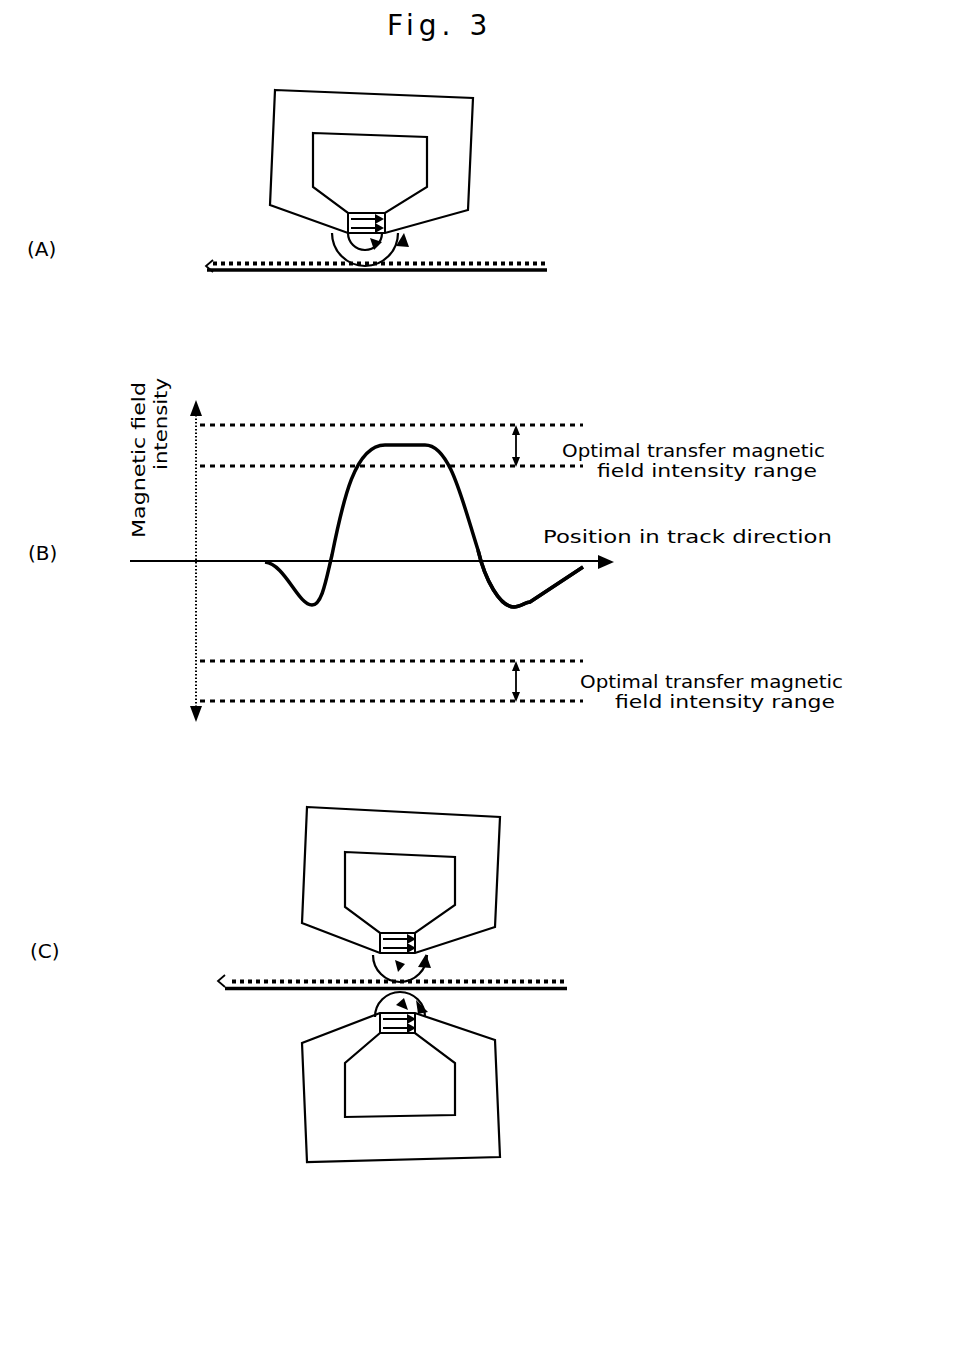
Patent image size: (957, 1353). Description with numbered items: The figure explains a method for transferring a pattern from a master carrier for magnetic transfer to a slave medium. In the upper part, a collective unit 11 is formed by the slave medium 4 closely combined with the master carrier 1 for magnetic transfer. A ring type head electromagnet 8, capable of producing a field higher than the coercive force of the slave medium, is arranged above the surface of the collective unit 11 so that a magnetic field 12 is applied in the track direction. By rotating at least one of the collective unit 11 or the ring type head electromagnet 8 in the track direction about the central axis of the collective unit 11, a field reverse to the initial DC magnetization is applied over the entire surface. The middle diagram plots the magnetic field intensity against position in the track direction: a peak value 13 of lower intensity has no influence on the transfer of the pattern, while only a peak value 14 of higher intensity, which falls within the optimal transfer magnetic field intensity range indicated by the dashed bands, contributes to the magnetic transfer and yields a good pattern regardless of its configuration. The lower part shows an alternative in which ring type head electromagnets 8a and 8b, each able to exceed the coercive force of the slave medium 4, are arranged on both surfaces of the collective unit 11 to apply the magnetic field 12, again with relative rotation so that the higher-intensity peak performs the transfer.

The master carrier for magnetic transfer 1 is at (513, 263).
The slave medium 4 is at (515, 275).
The ring type head electromagnet 8 is at (453, 140).
The ring type head electromagnet 8a is at (485, 857).
The ring type head electromagnet 8b is at (480, 1072).
The collective unit 11 is at (207, 265).
The magnetic field 12 is at (418, 247).
The peak value with lower intensity 13 is at (525, 603).
The peak value with higher intensity 14 is at (427, 445).